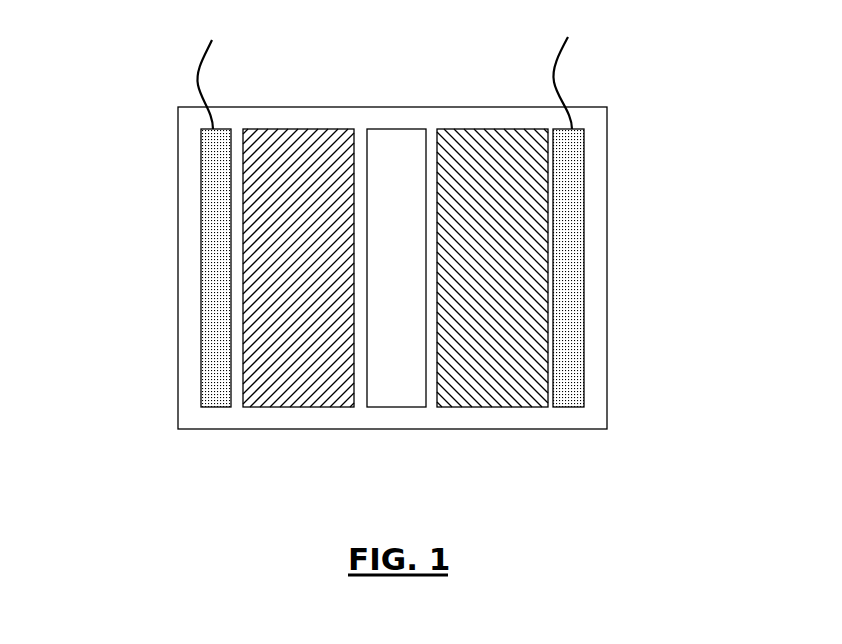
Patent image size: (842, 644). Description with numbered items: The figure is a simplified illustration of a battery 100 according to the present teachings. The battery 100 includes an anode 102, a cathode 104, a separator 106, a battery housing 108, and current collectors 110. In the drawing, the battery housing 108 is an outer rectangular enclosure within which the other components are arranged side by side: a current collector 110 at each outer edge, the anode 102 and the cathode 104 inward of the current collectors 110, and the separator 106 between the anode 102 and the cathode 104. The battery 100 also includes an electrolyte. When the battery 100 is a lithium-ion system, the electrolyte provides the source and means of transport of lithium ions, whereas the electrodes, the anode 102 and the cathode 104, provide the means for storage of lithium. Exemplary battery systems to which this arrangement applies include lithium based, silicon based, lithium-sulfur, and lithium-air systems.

The battery 100 is at (146, 165).
The anode 102 is at (302, 408).
The cathode 104 is at (513, 372).
The separator 106 is at (398, 360).
The battery housing 108 is at (607, 335).
The current collectors 110 is at (200, 268).